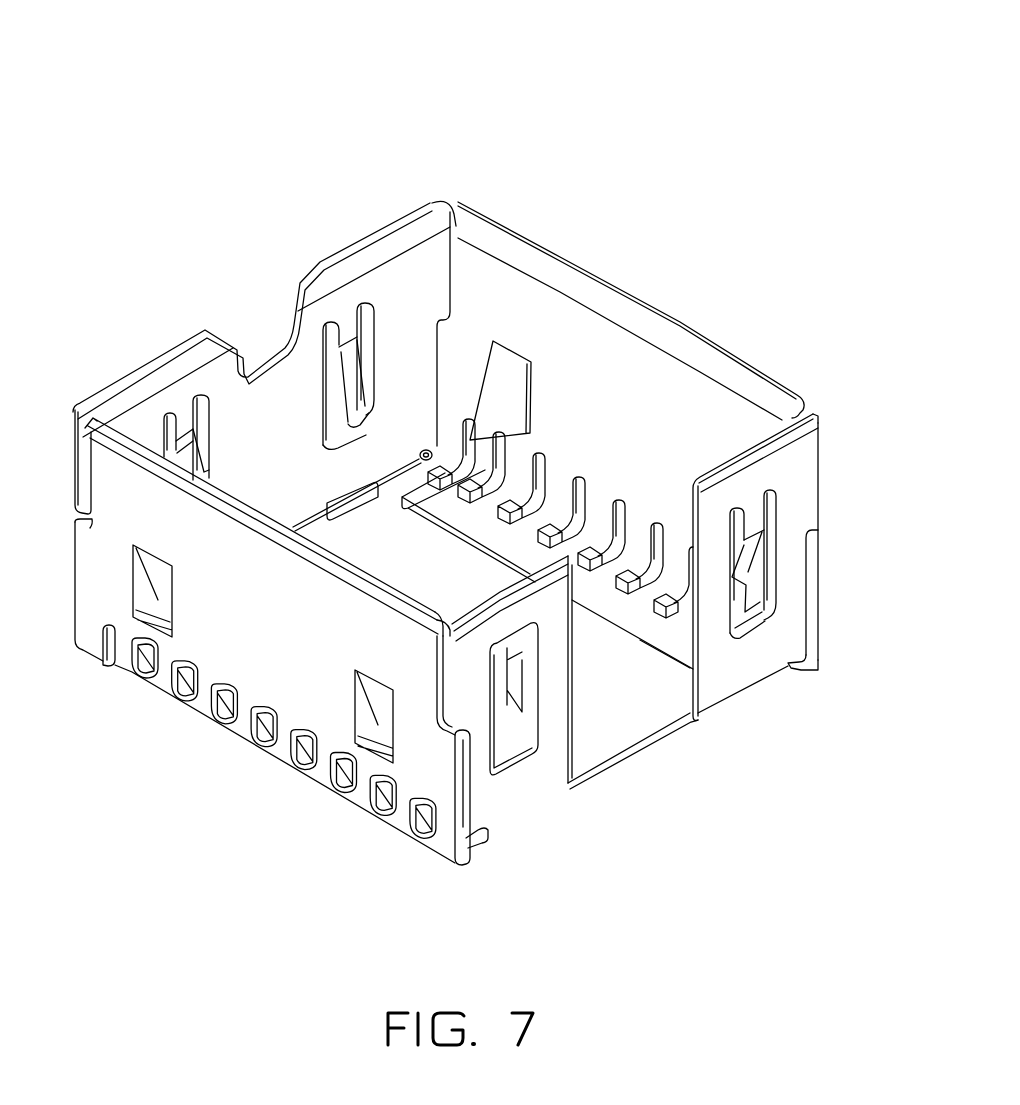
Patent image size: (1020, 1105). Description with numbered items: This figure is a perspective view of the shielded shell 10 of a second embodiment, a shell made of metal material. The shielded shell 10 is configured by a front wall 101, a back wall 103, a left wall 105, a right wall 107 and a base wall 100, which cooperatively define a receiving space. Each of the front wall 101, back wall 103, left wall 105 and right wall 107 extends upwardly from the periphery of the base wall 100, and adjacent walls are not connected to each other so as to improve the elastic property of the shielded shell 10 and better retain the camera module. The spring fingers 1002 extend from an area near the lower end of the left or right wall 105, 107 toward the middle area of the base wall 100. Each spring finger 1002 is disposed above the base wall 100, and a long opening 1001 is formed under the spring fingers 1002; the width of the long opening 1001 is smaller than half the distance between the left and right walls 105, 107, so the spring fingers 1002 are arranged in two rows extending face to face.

The shielded shell 10 is at (489, 40).
The base wall 100 is at (640, 700).
The front wall 101 is at (800, 485).
The back wall 103 is at (413, 284).
The left wall 105 is at (587, 387).
The right wall 107 is at (247, 637).
The long opening 1001 is at (653, 633).
The spring finger 1002 is at (680, 566).